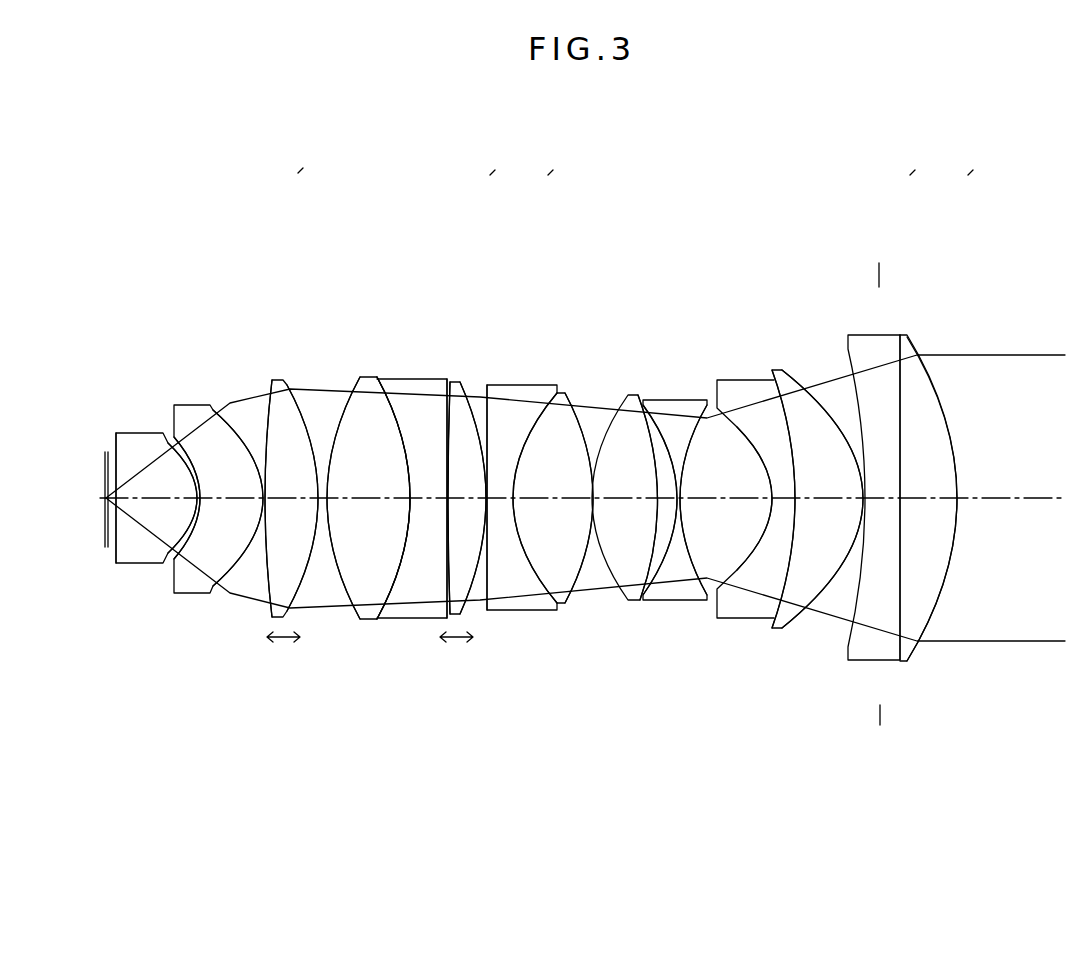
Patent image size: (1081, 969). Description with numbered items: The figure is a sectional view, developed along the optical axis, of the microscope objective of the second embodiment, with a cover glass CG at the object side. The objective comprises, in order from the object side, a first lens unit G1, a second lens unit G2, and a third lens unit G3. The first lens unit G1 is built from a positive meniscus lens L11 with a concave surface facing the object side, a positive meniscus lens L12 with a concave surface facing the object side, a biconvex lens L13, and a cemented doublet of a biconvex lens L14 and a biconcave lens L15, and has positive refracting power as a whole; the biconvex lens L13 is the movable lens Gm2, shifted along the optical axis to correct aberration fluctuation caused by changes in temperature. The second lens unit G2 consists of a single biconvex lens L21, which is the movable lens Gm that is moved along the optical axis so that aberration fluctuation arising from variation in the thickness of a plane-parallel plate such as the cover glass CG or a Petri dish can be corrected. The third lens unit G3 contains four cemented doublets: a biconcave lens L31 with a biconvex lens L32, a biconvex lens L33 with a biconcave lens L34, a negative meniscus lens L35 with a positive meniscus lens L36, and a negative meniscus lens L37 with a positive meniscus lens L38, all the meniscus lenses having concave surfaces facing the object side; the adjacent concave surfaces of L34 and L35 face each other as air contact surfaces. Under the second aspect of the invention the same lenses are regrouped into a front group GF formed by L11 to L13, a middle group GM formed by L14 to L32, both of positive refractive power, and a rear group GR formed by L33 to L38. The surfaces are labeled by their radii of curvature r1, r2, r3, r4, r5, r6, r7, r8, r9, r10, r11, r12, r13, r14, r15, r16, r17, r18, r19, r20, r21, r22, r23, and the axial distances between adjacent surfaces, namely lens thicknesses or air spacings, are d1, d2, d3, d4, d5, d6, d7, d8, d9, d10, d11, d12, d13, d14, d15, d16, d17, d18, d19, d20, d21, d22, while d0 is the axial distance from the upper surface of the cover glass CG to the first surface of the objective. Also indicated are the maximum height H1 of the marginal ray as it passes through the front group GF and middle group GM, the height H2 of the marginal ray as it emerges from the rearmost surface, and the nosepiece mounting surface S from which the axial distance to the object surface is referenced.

The cover glass CG is at (106, 455).
The positive meniscus lens L11 is at (147, 433).
The positive meniscus lens L12 is at (198, 405).
The biconvex lens L13 is at (280, 380).
The biconvex lens L14 is at (368, 377).
The biconcave lens L15 is at (413, 379).
The biconvex lens L21 is at (463, 380).
The biconcave lens L31 is at (517, 385).
The biconvex lens L32 is at (562, 393).
The biconvex lens L33 is at (638, 395).
The biconcave lens L34 is at (672, 400).
The negative meniscus lens L35 is at (768, 380).
The positive meniscus lens L36 is at (778, 370).
The negative meniscus lens L37 is at (860, 335).
The positive meniscus lens L38 is at (915, 340).
The radius of curvature r1 is at (114, 433).
The radius of curvature r2 is at (166, 433).
The radius of curvature r3 is at (190, 405).
The radius of curvature r4 is at (232, 412).
The radius of curvature r5 is at (263, 402).
The radius of curvature r6 is at (306, 400).
The radius of curvature r7 is at (331, 400).
The radius of curvature r8 is at (388, 379).
The radius of curvature r9 is at (410, 379).
The radius of curvature r10 is at (445, 385).
The radius of curvature r11 is at (490, 400).
The radius of curvature r12 is at (517, 390).
The radius of curvature r13 is at (535, 385).
The radius of curvature r14 is at (580, 393).
The radius of curvature r15 is at (610, 397).
The radius of curvature r16 is at (665, 393).
The radius of curvature r17 is at (695, 395).
The radius of curvature r18 is at (742, 393).
The radius of curvature r19 is at (755, 385).
The radius of curvature r20 is at (826, 398).
The radius of curvature r21 is at (845, 393).
The radius of curvature r22 is at (898, 393).
The radius of curvature r23 is at (937, 393).
The axial distance d0 is at (111, 498).
The axial distance d1 is at (145, 498).
The axial distance d2 is at (193, 498).
The axial distance d3 is at (228, 498).
The axial distance d4 is at (263, 498).
The axial distance d5 is at (293, 498).
The axial distance d6 is at (322, 498).
The axial distance d7 is at (363, 498).
The axial distance d8 is at (418, 498).
The axial distance d9 is at (442, 498).
The axial distance d10 is at (467, 498).
The axial distance d11 is at (500, 498).
The axial distance d12 is at (502, 498).
The axial distance d13 is at (550, 498).
The axial distance d14 is at (595, 498).
The axial distance d15 is at (625, 498).
The axial distance d16 is at (667, 498).
The axial distance d17 is at (722, 498).
The axial distance d18 is at (753, 498).
The axial distance d19 is at (782, 498).
The axial distance d20 is at (823, 498).
The axial distance d21 is at (862, 498).
The axial distance d22 is at (927, 498).
The first lens unit G1 is at (443, 172).
The second lens unit G2 is at (497, 172).
The third lens unit G3 is at (978, 172).
The front group GF is at (317, 848).
The middle group GM is at (590, 848).
The rear group GR is at (955, 848).
The movable lens Gm is at (452, 672).
The movable biconvex lens Gm2 is at (290, 672).
The maximum marginal ray height H1 is at (356, 392).
The marginal ray exit height H2 is at (987, 362).
The nosepiece mounting surface S is at (876, 494).